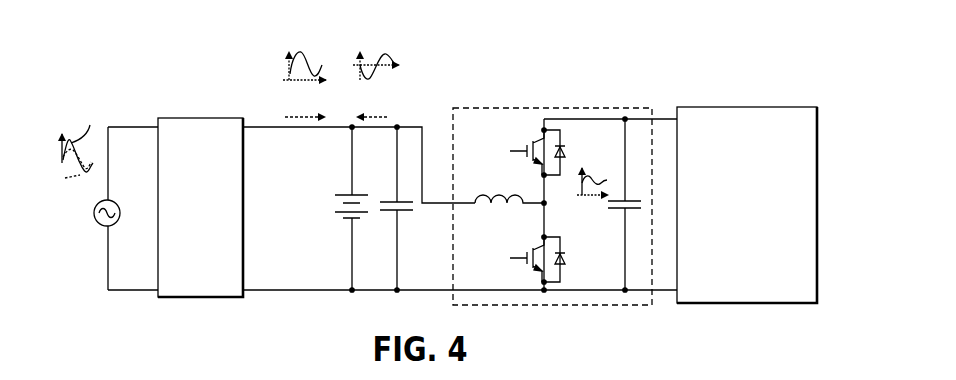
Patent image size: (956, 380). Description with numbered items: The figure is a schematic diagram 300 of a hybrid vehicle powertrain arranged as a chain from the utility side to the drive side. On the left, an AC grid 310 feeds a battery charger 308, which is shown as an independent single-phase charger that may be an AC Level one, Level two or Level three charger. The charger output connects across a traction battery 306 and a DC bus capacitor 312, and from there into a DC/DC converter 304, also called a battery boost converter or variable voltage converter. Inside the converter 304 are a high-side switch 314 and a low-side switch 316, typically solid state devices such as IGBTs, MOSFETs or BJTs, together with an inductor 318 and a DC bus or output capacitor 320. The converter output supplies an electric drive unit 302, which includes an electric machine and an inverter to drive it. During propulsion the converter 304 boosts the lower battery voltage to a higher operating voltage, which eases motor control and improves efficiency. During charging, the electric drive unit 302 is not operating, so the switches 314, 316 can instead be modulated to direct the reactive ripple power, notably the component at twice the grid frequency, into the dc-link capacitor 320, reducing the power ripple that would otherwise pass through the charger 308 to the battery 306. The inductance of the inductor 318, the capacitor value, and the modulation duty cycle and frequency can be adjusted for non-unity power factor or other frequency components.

The schematic diagram 300 is at (668, 46).
The electric drive unit 302 is at (727, 107).
The DC/DC converter 304 is at (633, 106).
The traction battery 306 is at (347, 193).
The battery charger 308 is at (230, 118).
The AC grid 310 is at (121, 215).
The DC bus capacitor 312 is at (403, 212).
The high-side switch 314 is at (540, 142).
The low-side switch 316 is at (537, 270).
The inductor 318 is at (483, 206).
The DC bus or output capacitor 320 is at (635, 199).